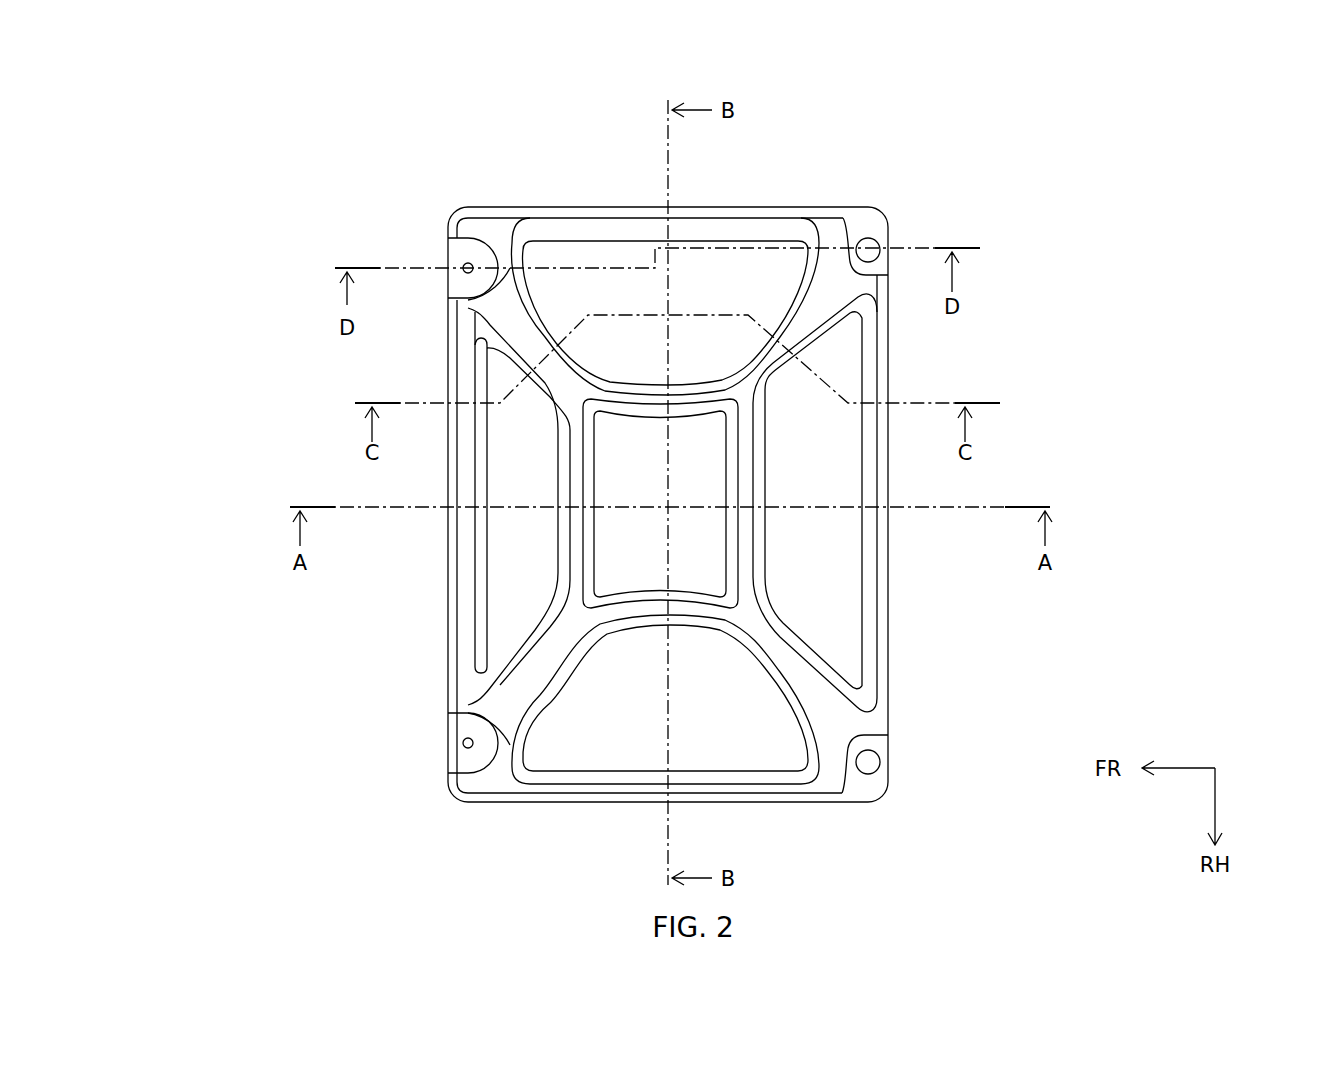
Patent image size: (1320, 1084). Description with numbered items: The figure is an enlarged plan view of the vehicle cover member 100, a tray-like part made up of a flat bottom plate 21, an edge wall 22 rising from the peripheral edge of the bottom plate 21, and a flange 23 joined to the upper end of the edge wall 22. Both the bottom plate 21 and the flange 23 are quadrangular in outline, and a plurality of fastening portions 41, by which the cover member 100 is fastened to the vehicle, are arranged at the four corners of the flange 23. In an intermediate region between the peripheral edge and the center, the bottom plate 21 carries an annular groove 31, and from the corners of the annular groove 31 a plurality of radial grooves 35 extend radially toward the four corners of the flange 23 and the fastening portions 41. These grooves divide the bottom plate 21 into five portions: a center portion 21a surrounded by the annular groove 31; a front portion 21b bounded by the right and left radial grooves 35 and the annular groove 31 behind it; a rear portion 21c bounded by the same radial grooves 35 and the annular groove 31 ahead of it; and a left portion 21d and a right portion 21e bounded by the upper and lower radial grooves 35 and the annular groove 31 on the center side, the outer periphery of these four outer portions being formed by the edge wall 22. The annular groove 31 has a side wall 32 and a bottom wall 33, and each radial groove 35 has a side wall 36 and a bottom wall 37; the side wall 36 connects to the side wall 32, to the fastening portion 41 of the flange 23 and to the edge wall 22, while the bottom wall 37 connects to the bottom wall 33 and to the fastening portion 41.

The vehicle cover member 100 is at (236, 170).
The bottom plate 21 is at (818, 480).
The center portion 21a is at (636, 523).
The front portion 21b is at (508, 628).
The rear portion 21c is at (822, 522).
The left portion 21d is at (750, 272).
The right portion 21e is at (596, 752).
The edge wall 22 is at (722, 232).
The flange 23 is at (836, 252).
The annular groove 31 is at (766, 578).
The side wall of annular groove 32 is at (767, 555).
The bottom wall of annular groove 33 is at (862, 643).
The radial groove 35 is at (540, 347).
The side wall of radial groove 36 is at (482, 385).
The bottom wall of radial groove 37 is at (553, 292).
The fastening portion 41 is at (874, 227).